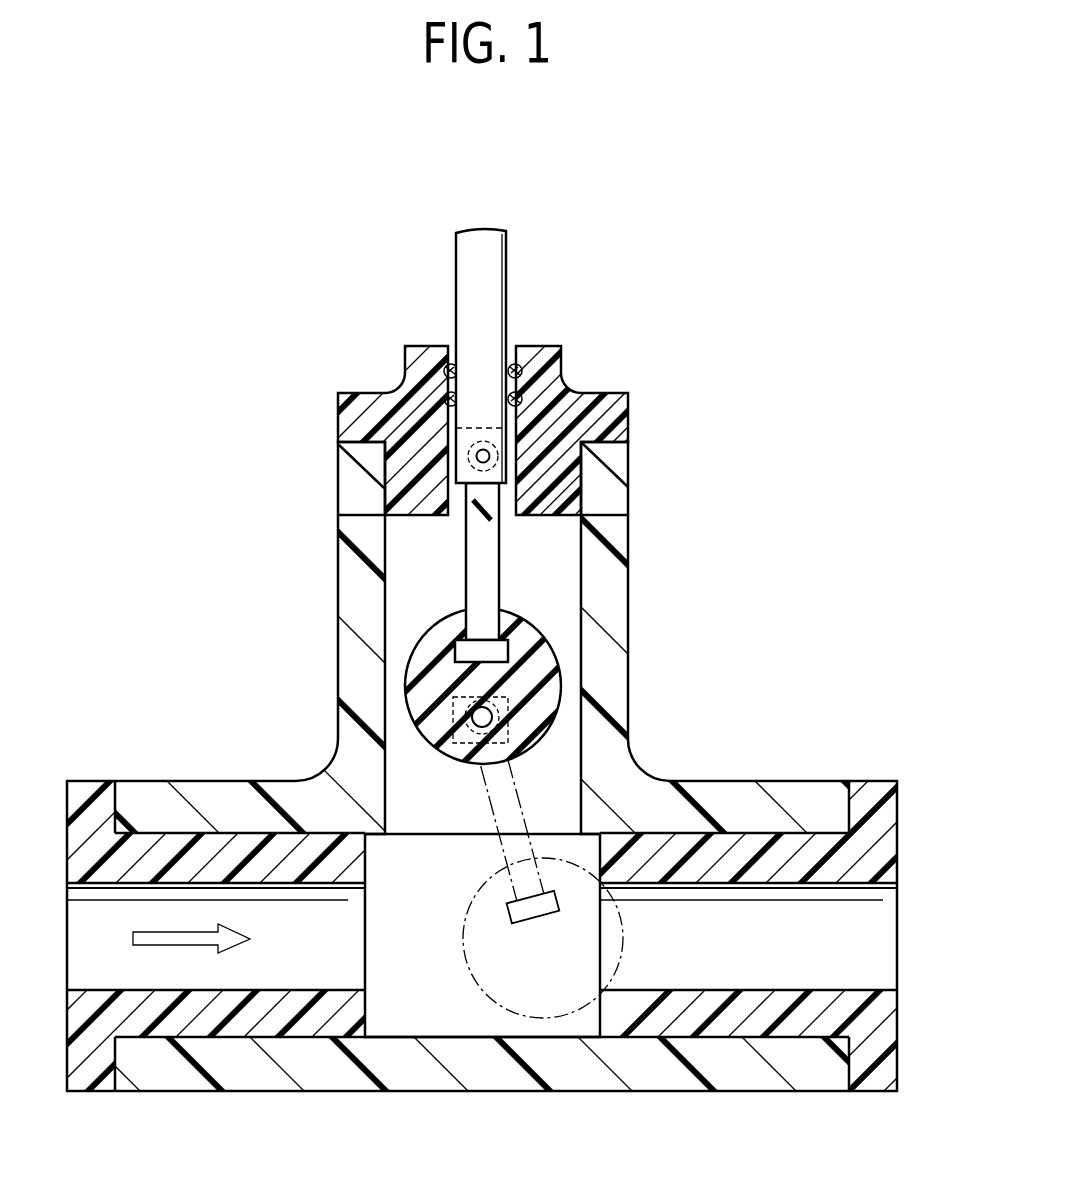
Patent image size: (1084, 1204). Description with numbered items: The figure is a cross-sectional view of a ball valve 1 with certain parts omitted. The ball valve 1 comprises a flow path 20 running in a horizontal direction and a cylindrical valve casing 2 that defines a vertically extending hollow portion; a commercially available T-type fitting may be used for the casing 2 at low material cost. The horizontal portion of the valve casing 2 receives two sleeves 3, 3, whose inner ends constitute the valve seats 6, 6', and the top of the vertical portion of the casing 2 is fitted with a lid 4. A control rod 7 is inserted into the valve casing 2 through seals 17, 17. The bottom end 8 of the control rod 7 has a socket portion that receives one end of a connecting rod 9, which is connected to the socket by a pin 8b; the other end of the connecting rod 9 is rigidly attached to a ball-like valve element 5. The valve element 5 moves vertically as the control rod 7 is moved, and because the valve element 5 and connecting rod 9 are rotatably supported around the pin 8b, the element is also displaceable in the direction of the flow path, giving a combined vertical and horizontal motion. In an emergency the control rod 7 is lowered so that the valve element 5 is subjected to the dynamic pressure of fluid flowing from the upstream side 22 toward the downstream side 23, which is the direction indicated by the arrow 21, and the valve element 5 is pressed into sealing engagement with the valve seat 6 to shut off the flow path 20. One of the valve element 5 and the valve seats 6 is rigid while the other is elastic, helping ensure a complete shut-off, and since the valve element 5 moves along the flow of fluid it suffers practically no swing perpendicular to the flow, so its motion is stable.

The ball valve 1 is at (632, 240).
The valve casing 2 is at (620, 680).
The sleeve 3 is at (92, 1075).
The lid 4 is at (619, 413).
The ball-like valve element 5 is at (435, 728).
The valve seat 6 is at (564, 938).
The valve seat 6' is at (463, 873).
The control rod 7 is at (497, 285).
The bottom end of the control rod 8 is at (525, 473).
The pin 8b is at (490, 457).
The connecting rod 9 is at (490, 553).
The seal 17 is at (520, 366).
The flow path 20 is at (140, 972).
The flow direction arrow 21 is at (133, 938).
The upstream side 22 is at (250, 953).
The downstream side 23 is at (757, 963).